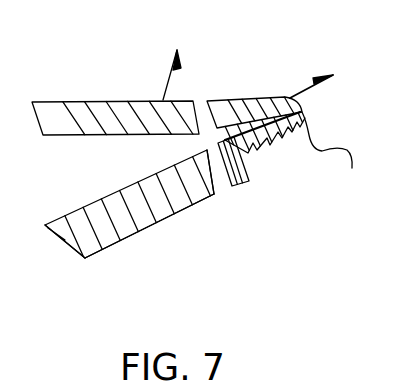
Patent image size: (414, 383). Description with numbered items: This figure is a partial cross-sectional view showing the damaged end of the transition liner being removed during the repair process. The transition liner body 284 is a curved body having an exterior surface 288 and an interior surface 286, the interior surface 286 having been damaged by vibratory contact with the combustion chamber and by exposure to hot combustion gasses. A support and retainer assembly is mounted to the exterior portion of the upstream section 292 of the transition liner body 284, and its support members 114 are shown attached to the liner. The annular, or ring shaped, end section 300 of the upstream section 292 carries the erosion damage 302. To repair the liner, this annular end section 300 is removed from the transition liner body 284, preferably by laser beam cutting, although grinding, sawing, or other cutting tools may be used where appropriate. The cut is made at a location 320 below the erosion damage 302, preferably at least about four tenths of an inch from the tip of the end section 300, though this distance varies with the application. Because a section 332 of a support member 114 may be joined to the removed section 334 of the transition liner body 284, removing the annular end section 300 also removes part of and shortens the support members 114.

The support members 114 is at (80, 108).
The exterior surface 288 is at (138, 240).
The transition liner body 284 is at (67, 242).
The upstream section 292 is at (112, 227).
The interior surface 286 is at (173, 218).
The cutting location 320 is at (220, 193).
The annular end section 300 is at (289, 123).
The section of a support member 332 is at (232, 101).
The removed section of transition liner body 334 is at (298, 155).
The erosion damage 302 is at (249, 167).